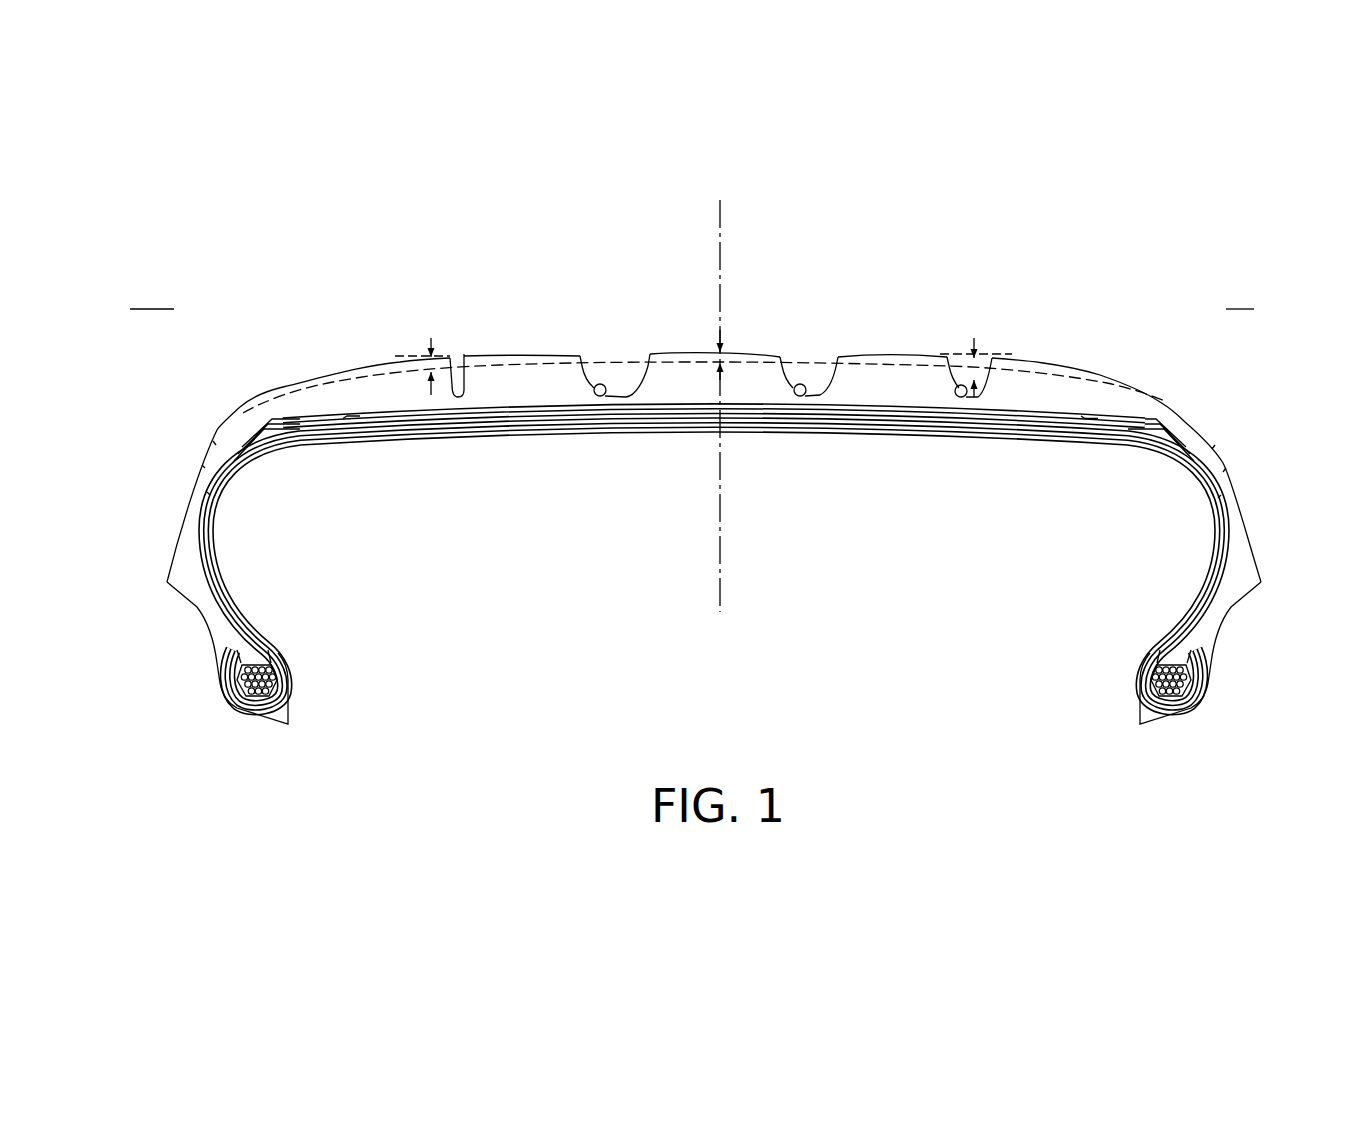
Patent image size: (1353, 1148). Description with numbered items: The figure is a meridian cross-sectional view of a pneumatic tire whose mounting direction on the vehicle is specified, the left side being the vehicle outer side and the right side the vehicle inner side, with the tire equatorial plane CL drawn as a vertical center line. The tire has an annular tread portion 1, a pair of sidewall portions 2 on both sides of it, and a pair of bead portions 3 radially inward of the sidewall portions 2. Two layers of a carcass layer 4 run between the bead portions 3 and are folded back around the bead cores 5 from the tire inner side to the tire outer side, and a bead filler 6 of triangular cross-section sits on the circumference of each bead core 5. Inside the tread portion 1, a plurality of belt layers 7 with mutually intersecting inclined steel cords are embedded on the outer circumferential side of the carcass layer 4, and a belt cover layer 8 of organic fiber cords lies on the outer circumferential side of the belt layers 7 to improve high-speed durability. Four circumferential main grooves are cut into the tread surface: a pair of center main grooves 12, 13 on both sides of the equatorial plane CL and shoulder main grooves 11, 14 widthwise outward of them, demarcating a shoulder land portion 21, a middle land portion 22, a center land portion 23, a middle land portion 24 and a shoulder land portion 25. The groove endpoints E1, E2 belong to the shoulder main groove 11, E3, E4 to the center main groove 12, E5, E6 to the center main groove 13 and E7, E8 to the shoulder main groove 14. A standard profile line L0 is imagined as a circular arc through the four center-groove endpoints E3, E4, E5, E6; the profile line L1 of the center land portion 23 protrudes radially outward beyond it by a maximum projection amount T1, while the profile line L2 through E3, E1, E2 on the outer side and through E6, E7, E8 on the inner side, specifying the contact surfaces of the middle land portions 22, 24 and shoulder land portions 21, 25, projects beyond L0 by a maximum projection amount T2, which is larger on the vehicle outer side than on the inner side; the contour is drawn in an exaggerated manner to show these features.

The tread portion 1 is at (700, 448).
The sidewall portion 2 is at (194, 486).
The bead portion 3 is at (215, 664).
The carcass layer 4 is at (1210, 490).
The bead core 5 is at (278, 673).
The bead filler 6 is at (253, 657).
The belt layer 7 is at (365, 429).
The belt cover layer 8 is at (294, 424).
The shoulder main groove 11 is at (452, 397).
The center main groove 12 is at (608, 398).
The center main groove 13 is at (799, 397).
The shoulder main groove 14 is at (964, 398).
The shoulder land portion 21 is at (312, 392).
The middle land portion 22 is at (548, 384).
The center land portion 23 is at (697, 375).
The middle land portion 24 is at (903, 376).
The shoulder land portion 25 is at (1062, 366).
The endpoint of shoulder main groove E1 is at (452, 387).
The endpoint of shoulder main groove E2 is at (465, 353).
The endpoint of center main groove E3 is at (594, 386).
The endpoint of center main groove E4 is at (650, 355).
The endpoint of center main groove E5 is at (794, 384).
The endpoint of center main groove E6 is at (838, 357).
The endpoint of shoulder main groove E7 is at (957, 385).
The endpoint of shoulder main groove E8 is at (992, 358).
The standard profile line L0 is at (372, 376).
The profile line L1 is at (752, 353).
The profile line L2 is at (392, 366).
The maximum projection amount T1 is at (737, 329).
The maximum projection amount T2 is at (430, 338).
The tire equatorial plane CL is at (720, 392).